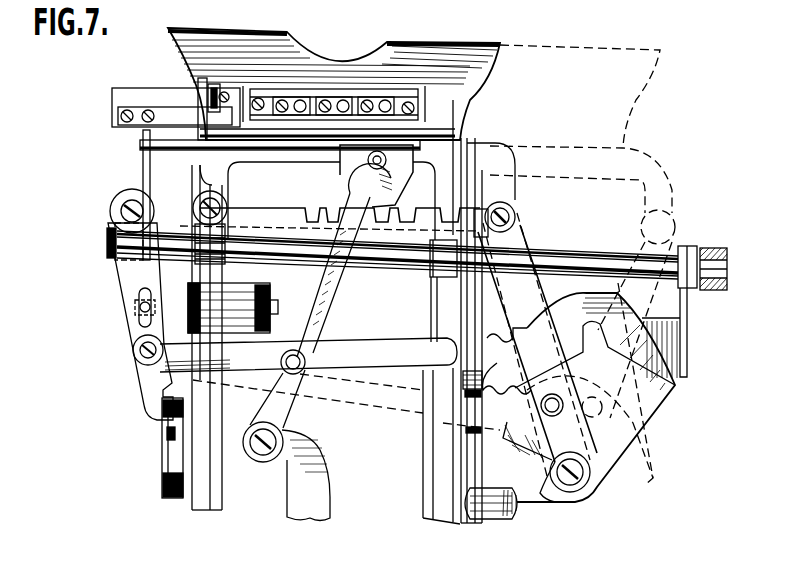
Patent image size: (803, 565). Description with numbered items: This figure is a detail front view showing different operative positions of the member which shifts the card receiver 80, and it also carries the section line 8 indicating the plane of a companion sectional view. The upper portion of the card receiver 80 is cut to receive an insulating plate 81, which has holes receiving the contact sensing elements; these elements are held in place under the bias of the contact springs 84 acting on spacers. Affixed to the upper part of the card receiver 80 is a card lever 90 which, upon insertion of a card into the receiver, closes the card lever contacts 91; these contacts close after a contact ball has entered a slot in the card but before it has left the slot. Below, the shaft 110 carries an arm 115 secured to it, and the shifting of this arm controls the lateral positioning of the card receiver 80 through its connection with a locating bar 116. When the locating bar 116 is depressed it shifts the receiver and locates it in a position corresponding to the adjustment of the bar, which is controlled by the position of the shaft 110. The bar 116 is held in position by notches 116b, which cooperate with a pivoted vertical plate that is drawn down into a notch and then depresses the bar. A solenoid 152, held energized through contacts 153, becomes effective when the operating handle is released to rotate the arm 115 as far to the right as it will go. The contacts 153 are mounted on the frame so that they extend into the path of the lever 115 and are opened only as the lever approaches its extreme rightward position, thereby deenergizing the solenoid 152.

The section line 8- 8 is at (83, 48).
The card receiver 80 is at (227, 45).
The insulating plate 81 is at (419, 120).
The contact springs 84 is at (372, 100).
The card lever 90 is at (210, 108).
The card lever contacts 91 is at (191, 117).
The shaft 110 is at (126, 206).
The arm 115 is at (133, 282).
The locating bar 116 is at (358, 351).
The notches 116b is at (503, 322).
The solenoid 152 is at (233, 297).
The contacts 153 is at (162, 443).